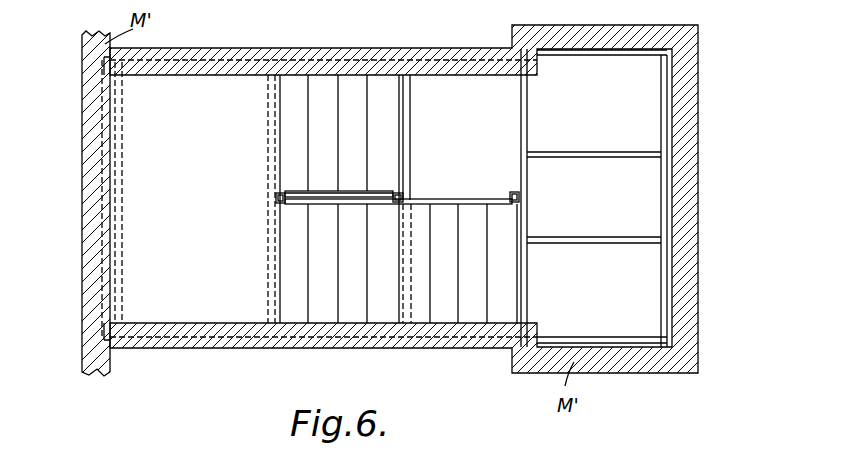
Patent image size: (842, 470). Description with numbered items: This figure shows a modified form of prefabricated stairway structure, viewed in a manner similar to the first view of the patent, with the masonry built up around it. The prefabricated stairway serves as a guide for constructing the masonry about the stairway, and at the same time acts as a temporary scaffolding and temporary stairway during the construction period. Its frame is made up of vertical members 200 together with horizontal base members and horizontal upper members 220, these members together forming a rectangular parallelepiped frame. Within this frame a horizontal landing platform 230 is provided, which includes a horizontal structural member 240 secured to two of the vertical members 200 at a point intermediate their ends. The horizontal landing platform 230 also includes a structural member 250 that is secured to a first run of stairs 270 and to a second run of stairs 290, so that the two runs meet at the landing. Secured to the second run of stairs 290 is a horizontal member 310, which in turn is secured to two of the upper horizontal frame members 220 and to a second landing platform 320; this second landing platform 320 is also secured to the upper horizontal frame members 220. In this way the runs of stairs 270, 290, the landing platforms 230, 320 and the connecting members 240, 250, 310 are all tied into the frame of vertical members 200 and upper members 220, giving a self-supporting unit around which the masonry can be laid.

The vertical members 200 is at (108, 79).
The horizontal upper members 220 is at (103, 205).
The horizontal landing platform 230 is at (207, 201).
The horizontal structural member 240 is at (120, 223).
The structural member 250 is at (271, 140).
The first run of stairs 270 is at (380, 128).
The second run of stairs 290 is at (304, 262).
The horizontal member 310 is at (527, 263).
The second landing platform 320 is at (586, 58).